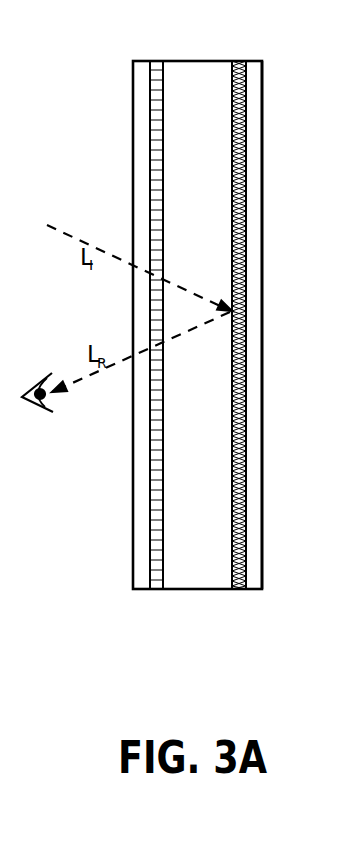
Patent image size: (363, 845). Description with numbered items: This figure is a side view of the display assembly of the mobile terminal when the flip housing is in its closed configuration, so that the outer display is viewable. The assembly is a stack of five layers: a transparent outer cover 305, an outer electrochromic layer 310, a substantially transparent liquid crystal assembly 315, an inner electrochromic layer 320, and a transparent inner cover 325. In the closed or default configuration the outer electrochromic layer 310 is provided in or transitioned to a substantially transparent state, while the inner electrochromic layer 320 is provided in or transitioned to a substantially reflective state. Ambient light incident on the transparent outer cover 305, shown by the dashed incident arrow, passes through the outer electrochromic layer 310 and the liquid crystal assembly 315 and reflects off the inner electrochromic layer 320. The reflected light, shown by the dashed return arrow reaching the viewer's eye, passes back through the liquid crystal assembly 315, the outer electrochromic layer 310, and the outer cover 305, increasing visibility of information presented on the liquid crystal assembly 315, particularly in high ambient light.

The transparent outer cover 305 is at (140, 104).
The outer electrochromic layer 310 is at (154, 63).
The substantially transparent liquid crystal assembly 315 is at (217, 100).
The inner electrochromic layer 320 is at (235, 62).
The transparent inner cover 325 is at (262, 129).